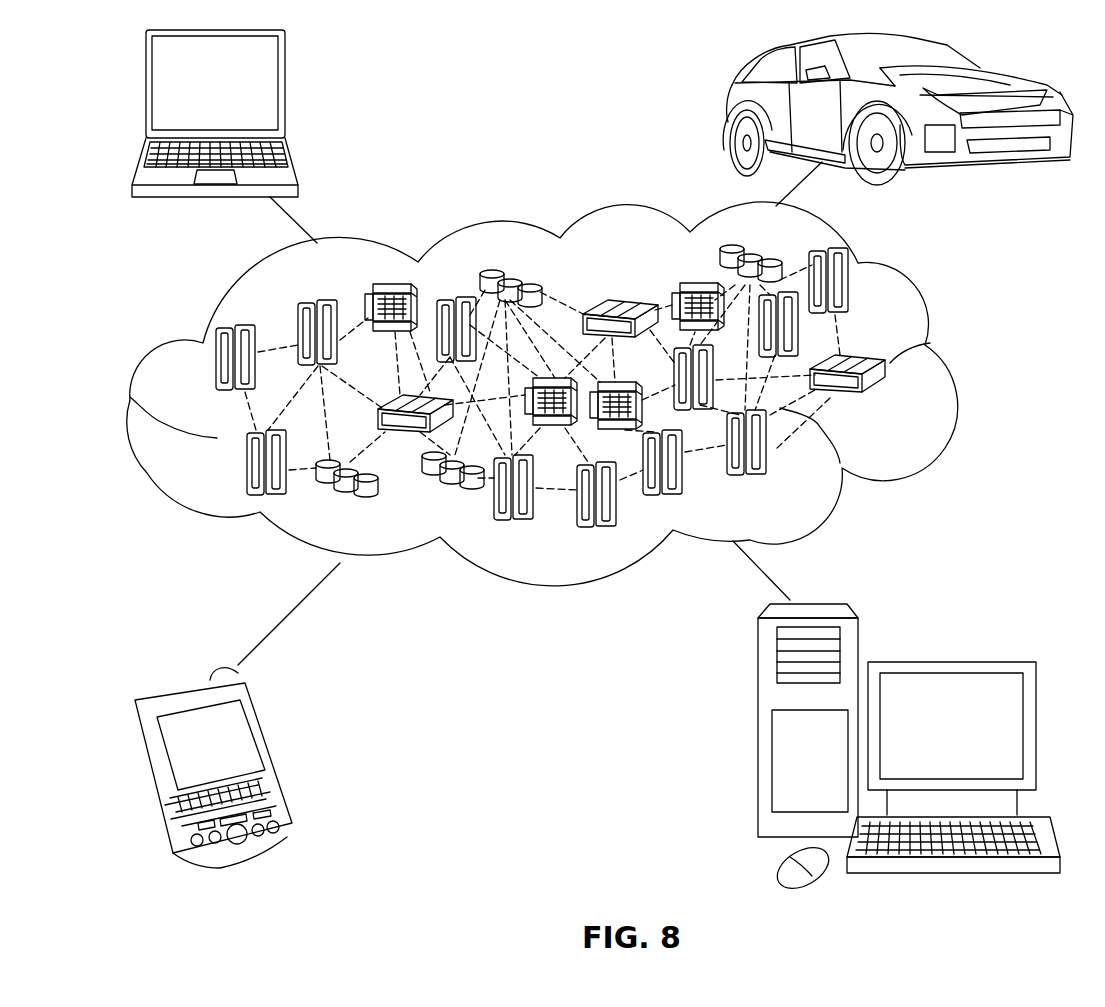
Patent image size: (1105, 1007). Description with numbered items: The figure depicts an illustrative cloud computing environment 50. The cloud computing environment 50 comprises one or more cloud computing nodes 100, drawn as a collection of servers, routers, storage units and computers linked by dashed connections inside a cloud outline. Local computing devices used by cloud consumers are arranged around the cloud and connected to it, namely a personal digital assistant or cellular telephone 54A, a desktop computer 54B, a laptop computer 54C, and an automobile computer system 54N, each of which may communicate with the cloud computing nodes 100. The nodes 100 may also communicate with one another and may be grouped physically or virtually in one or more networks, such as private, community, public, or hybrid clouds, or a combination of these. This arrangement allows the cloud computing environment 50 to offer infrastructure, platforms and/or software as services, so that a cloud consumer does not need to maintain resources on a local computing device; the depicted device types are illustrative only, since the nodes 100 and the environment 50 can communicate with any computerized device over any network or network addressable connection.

The cloud computing environment 50 is at (947, 365).
The cloud computing nodes 100 is at (889, 398).
The personal digital assistant (PDA) or cellular telephone 54A is at (275, 757).
The desktop computer 54B is at (948, 662).
The laptop computer 54C is at (286, 92).
The automobile computer system 54N is at (728, 112).